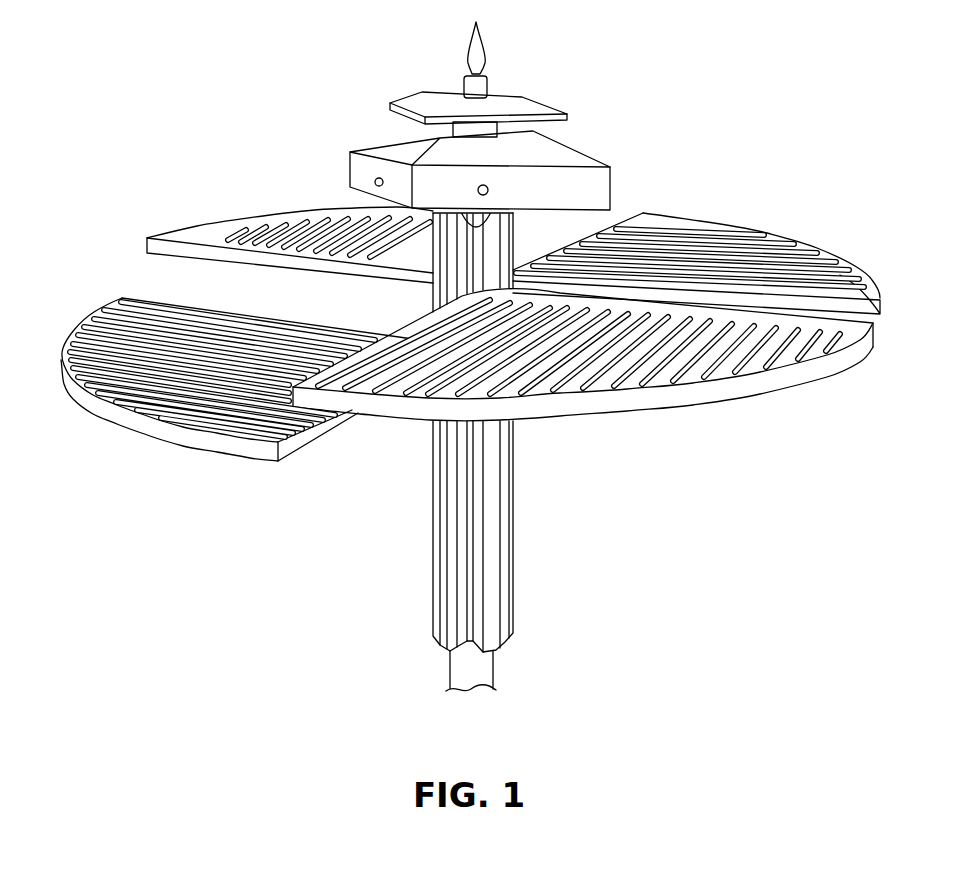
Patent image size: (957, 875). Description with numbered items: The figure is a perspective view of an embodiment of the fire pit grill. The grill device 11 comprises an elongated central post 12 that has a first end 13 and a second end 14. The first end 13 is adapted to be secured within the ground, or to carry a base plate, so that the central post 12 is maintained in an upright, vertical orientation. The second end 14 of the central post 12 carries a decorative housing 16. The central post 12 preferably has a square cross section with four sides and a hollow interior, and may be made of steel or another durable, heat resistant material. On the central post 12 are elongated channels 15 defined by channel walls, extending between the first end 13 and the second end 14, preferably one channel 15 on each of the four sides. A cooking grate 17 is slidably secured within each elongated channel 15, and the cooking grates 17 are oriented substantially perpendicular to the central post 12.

The grill device 11 is at (108, 185).
The central post 12 is at (485, 497).
The first end 13 is at (475, 662).
The second end 14 is at (483, 216).
The elongated channels 15 is at (474, 433).
The decorative housing 16 is at (553, 155).
The cooking grate 17 is at (312, 225).